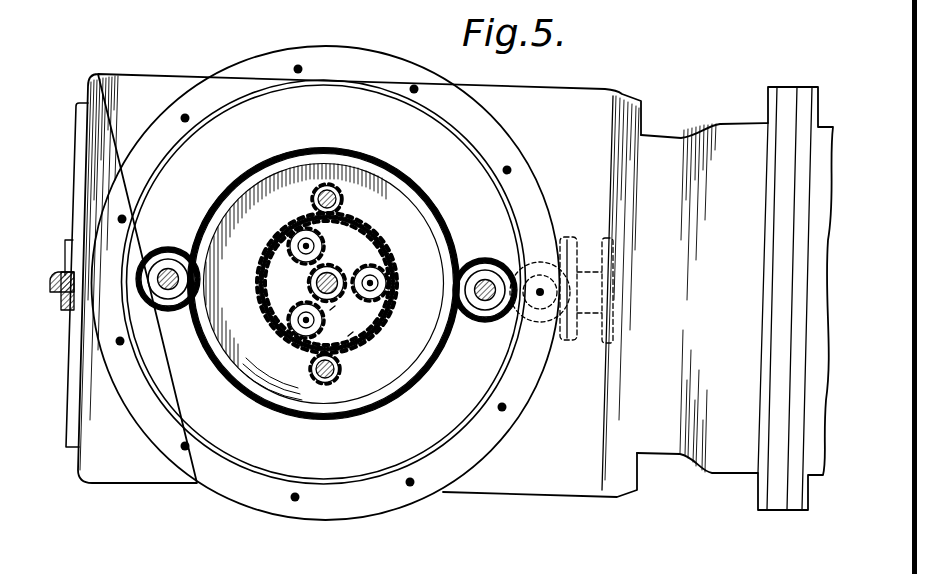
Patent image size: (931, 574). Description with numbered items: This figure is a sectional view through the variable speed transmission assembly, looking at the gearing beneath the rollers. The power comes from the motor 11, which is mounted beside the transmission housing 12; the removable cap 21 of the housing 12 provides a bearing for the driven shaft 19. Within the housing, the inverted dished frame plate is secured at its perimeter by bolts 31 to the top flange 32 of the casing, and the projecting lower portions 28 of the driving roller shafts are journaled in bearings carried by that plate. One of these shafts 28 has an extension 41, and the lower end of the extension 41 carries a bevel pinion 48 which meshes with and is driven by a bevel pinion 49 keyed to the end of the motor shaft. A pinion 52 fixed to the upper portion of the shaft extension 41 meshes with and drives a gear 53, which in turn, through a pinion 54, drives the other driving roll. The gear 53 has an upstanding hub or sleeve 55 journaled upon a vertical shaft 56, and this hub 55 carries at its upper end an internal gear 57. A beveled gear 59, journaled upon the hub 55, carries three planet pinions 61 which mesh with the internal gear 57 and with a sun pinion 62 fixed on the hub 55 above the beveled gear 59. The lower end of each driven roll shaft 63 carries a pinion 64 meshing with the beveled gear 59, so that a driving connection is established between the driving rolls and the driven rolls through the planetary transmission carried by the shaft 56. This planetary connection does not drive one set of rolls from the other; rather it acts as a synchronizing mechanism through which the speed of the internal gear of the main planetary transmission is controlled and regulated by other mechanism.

The motor 11 is at (722, 128).
The transmission housing 12 is at (577, 100).
The driven shaft 19 is at (65, 240).
The removable cap 21 is at (80, 107).
The driving roller shaft 28 is at (168, 290).
The bolts 31 is at (298, 72).
The top flange 32 is at (383, 506).
The shaft extension 41 is at (540, 288).
The bevel pinion 48 is at (517, 308).
The bevel pinion 49 is at (569, 345).
The pinion 52 is at (484, 260).
The gear 53 is at (440, 205).
The pinion 54 is at (173, 252).
The hub or sleeve 55 is at (310, 298).
The vertical shaft 56 is at (334, 306).
The internal gear 57 is at (272, 254).
The beveled gear 59 is at (353, 332).
The planet pinions 61 is at (388, 270).
The sun pinion 62 is at (331, 273).
The driven roll shaft 63 is at (343, 190).
The pinion 64 is at (347, 203).